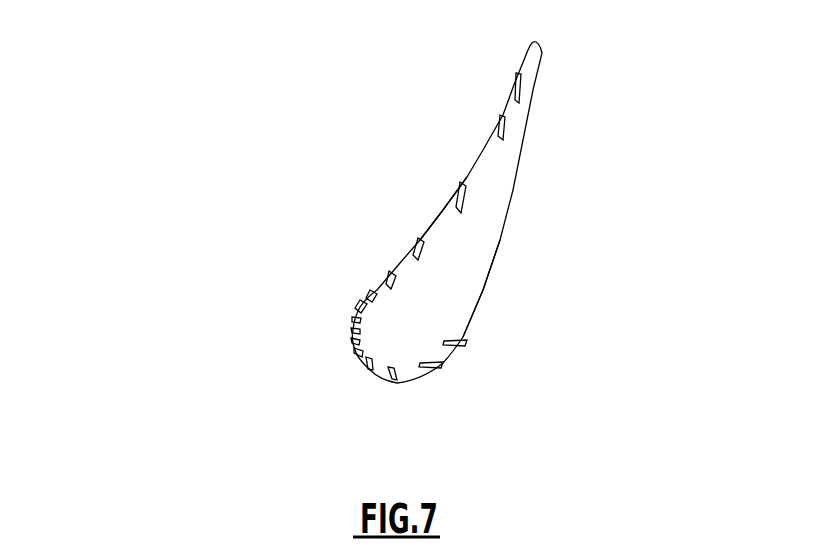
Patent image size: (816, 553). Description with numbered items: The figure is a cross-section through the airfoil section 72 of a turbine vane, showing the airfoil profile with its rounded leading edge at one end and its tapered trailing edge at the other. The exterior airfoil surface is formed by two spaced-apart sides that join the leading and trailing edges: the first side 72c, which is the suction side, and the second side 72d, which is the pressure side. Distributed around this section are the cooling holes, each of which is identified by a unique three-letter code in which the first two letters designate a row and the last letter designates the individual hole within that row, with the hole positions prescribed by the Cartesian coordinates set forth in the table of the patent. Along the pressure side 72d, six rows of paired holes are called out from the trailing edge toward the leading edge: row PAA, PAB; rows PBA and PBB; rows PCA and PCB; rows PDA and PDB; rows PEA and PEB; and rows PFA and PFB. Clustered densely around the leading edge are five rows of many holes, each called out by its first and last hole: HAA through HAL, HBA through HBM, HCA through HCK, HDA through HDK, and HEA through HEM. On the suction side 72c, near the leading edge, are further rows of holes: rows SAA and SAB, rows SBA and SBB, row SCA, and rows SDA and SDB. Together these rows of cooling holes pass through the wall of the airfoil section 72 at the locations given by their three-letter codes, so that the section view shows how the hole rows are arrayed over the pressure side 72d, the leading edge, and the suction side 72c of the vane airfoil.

The airfoil section 72 is at (532, 190).
The first side 72c is at (496, 264).
The second side 72d is at (442, 208).
The cooling hole PAA is at (419, 54).
The cooling hole PAB is at (518, 76).
The cooling hole PBA is at (389, 91).
The cooling hole PBB is at (503, 115).
The cooling hole PCA is at (356, 149).
The cooling hole PCB is at (467, 178).
The cooling hole PDA is at (302, 196).
The cooling hole PDB is at (420, 237).
The cooling hole PEA is at (279, 233).
The cooling hole PEB is at (398, 262).
The cooling hole PFA is at (257, 262).
The cooling hole PFB is at (369, 288).
The cooling hole HAA is at (251, 286).
The cooling hole HAL is at (355, 294).
The cooling hole HBA is at (236, 319).
The cooling hole HBM is at (353, 310).
The cooling hole HCA is at (225, 351).
The cooling hole HCK is at (350, 326).
The cooling hole HDA is at (214, 378).
The cooling hole HDK is at (350, 338).
The cooling hole HEA is at (204, 404).
The cooling hole HEM is at (351, 349).
The cooling hole SAA is at (484, 411).
The cooling hole SAB is at (371, 364).
The cooling hole SBA is at (510, 400).
The cooling hole SBB is at (389, 371).
The cooling hole SCA is at (443, 365).
The cooling hole SDA is at (574, 325).
The cooling hole SDB is at (463, 340).